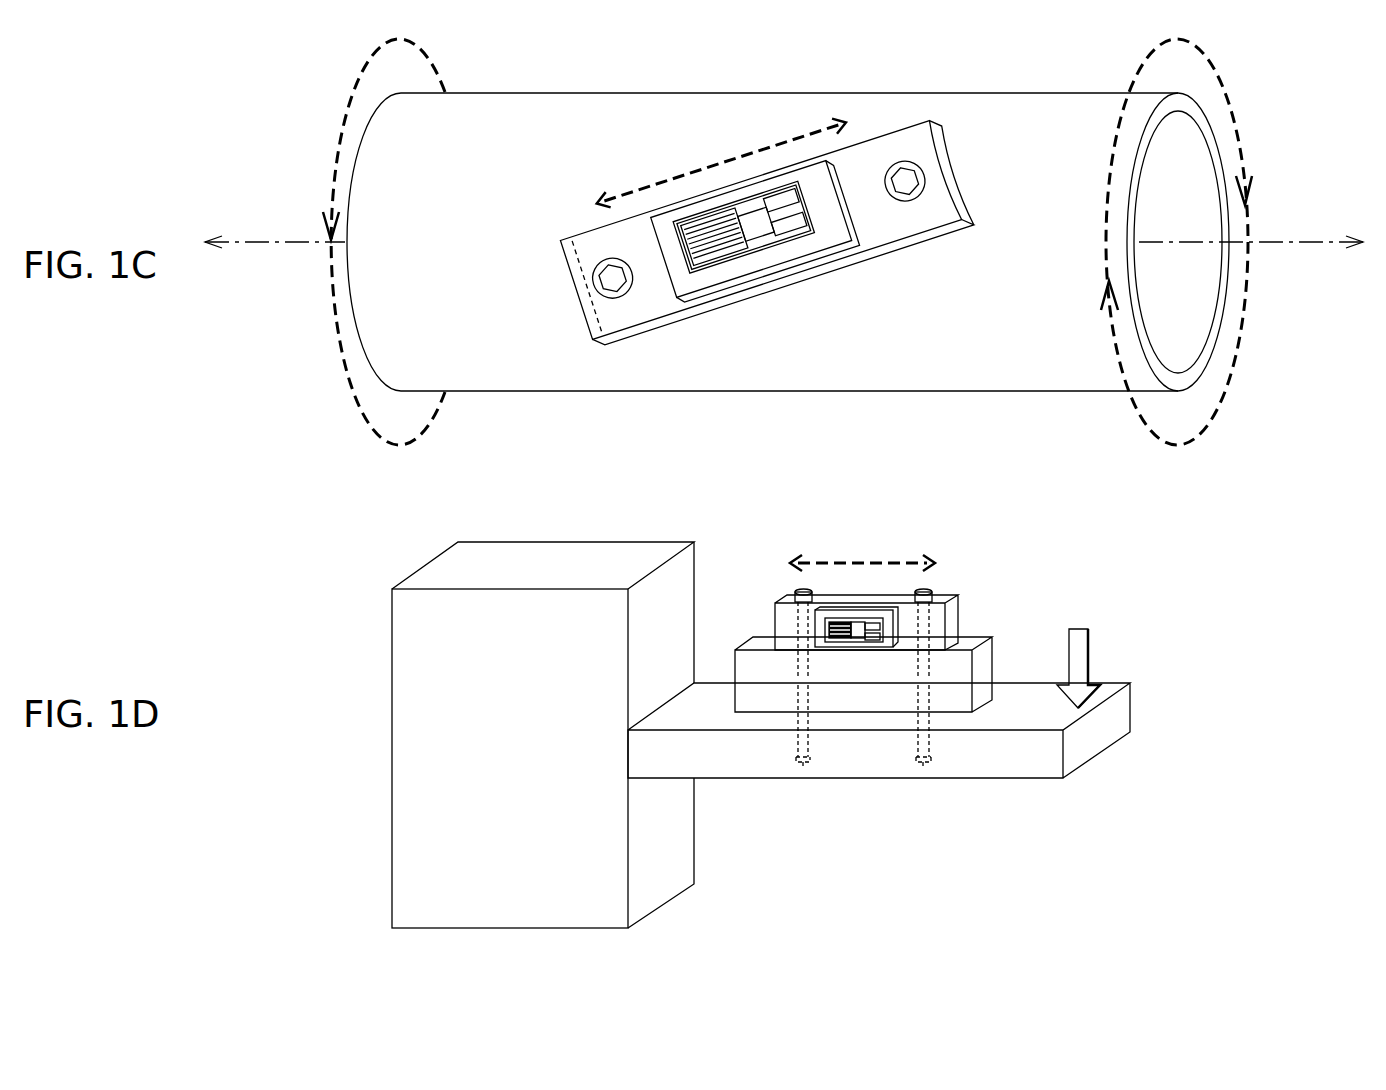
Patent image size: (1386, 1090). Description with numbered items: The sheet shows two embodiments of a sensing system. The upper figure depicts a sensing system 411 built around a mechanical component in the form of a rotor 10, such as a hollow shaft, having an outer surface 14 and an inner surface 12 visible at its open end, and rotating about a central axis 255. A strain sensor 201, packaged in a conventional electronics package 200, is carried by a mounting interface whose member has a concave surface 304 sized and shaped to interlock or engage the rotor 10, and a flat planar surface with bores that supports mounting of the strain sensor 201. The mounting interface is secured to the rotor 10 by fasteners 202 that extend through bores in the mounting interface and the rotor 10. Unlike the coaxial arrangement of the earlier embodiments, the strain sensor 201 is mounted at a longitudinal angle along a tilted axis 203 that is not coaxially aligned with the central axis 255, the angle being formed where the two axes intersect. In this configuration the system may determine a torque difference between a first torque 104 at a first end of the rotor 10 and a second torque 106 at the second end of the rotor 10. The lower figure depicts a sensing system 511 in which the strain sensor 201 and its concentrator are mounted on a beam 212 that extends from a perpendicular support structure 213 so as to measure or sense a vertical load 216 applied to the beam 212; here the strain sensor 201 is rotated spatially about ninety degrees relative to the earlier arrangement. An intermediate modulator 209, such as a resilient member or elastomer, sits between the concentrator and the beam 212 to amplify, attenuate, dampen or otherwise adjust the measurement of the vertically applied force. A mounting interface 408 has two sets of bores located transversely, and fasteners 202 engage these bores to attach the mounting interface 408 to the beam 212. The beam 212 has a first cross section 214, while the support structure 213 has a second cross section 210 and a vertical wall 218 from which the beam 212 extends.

In FIG. 1C, the rotor 10 is at (1032, 150).
In FIG. 1C, the inner surface 12 is at (1180, 344).
In FIG. 1C, the outer surface 14 is at (1063, 253).
In FIG. 1C, the first torque 104 is at (354, 82).
In FIG. 1C, the second torque 106 is at (1228, 99).
In FIG. 1C, the central axis 255 is at (272, 240).
In FIG. 1C, the sensing system 411 is at (555, 45).
In FIG. 1D, the electronics package 200 is at (838, 622).
In FIG. 1D, the strain sensor 201 is at (960, 500).
In FIG. 1D, the fasteners 202 is at (803, 592).
In FIG. 1D, the tilted axis 203 is at (877, 550).
In FIG. 1C, the concave surface 304 is at (947, 152).
In FIG. 1D, the sensing system 511 is at (473, 490).
In FIG. 1D, the intermediate modulator 209 is at (775, 677).
In FIG. 1D, the second cross section 210 is at (564, 567).
In FIG. 1D, the beam 212 is at (713, 702).
In FIG. 1D, the support structure 213 is at (505, 659).
In FIG. 1D, the first cross section 214 is at (1088, 735).
In FIG. 1D, the vertical load 216 is at (1078, 650).
In FIG. 1D, the vertical wall 218 is at (655, 653).
In FIG. 1D, the mounting interface 408 is at (912, 627).